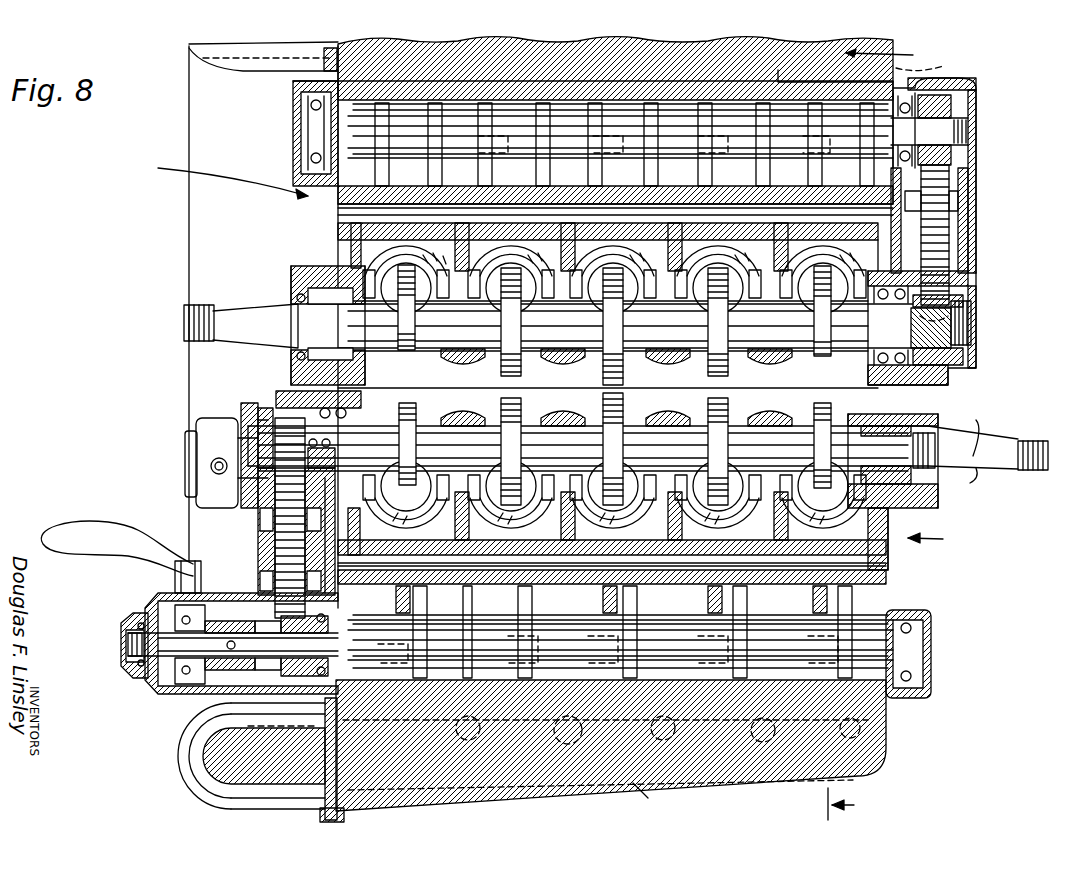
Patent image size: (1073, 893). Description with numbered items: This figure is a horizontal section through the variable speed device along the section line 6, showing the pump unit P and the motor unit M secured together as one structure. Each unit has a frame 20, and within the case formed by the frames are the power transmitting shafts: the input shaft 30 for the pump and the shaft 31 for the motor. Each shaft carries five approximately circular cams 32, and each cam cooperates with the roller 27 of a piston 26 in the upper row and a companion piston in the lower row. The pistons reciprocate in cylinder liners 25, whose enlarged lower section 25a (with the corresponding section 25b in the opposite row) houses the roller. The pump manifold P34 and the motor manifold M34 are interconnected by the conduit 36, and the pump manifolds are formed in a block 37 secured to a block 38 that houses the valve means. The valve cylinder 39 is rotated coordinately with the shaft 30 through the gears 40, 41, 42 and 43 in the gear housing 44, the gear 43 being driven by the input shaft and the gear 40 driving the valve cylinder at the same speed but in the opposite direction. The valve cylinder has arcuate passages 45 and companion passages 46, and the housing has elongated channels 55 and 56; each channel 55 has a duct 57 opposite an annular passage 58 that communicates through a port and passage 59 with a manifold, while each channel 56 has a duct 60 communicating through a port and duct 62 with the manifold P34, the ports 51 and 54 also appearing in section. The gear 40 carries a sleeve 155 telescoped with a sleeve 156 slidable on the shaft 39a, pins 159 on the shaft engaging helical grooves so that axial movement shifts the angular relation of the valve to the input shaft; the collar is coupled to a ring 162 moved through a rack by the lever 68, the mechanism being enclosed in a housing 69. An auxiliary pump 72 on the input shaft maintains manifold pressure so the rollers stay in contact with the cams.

The section line 6 is at (873, 430).
The second manifold of the motor unit M34 is at (934, 60).
The second manifold of the pump unit P34 is at (656, 801).
The motor unit M is at (219, 173).
The pump unit P is at (935, 535).
The frame 20 is at (330, 226).
The cylinder liner 25 is at (613, 383).
The enlarged lower section 25a is at (647, 272).
The bearing support 25b is at (772, 487).
The piston 26 is at (630, 378).
The roller 27 is at (555, 379).
The power transmitting shaft 30 is at (472, 424).
The power transmitting shaft 31 is at (456, 342).
The cam 32 is at (825, 393).
The conduit 36 is at (185, 203).
The block 37 is at (722, 770).
The block 38 is at (290, 181).
The valve cylinder 39 is at (300, 122).
The shaft 39a is at (135, 660).
The gear 40 is at (968, 360).
The gear 41 is at (960, 233).
The gear 42 is at (945, 160).
The gear 43 is at (950, 95).
The gear housing 44 is at (955, 183).
The arcuate passage 45 is at (600, 394).
The companion passage 46 is at (619, 390).
The detent 51 is at (613, 389).
The detent 54 is at (609, 389).
The elongated channel 55 is at (613, 358).
The elongated channel 56 is at (610, 358).
The duct 57 is at (619, 390).
The annular passage 58 is at (612, 412).
The port and passage 59 is at (613, 390).
The duct 60 is at (604, 386).
The port and duct 62 is at (609, 390).
The lever 68 is at (90, 550).
The housing 69 is at (140, 680).
The auxiliary pump 72 is at (205, 462).
The sleeve 155 is at (268, 666).
The sleeve 156 is at (215, 628).
The pin 159 is at (227, 637).
The ring 162 is at (165, 700).